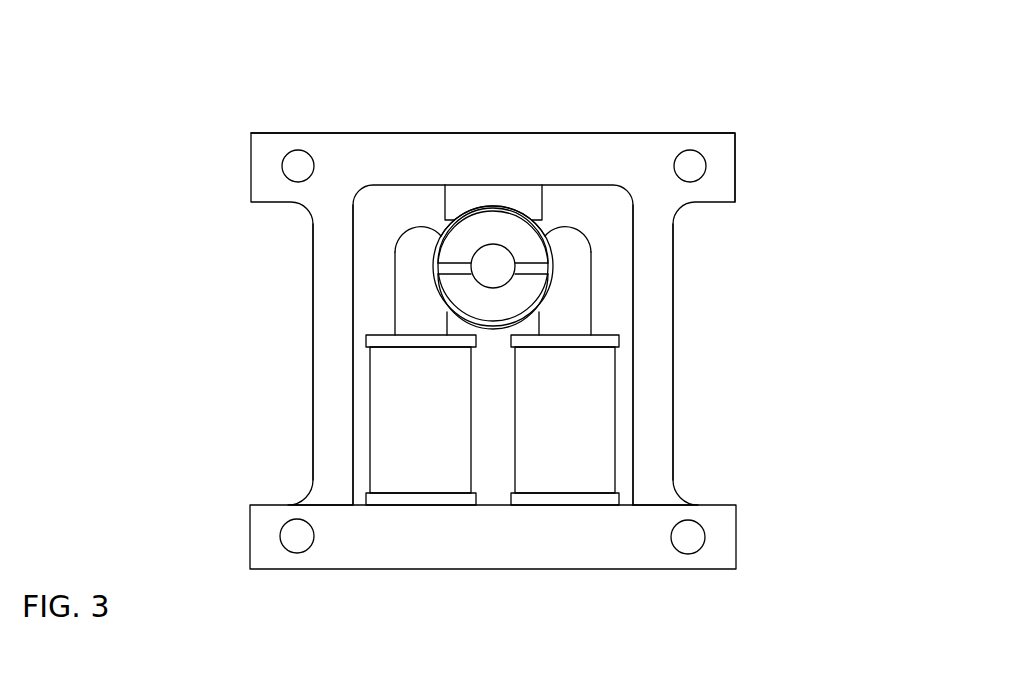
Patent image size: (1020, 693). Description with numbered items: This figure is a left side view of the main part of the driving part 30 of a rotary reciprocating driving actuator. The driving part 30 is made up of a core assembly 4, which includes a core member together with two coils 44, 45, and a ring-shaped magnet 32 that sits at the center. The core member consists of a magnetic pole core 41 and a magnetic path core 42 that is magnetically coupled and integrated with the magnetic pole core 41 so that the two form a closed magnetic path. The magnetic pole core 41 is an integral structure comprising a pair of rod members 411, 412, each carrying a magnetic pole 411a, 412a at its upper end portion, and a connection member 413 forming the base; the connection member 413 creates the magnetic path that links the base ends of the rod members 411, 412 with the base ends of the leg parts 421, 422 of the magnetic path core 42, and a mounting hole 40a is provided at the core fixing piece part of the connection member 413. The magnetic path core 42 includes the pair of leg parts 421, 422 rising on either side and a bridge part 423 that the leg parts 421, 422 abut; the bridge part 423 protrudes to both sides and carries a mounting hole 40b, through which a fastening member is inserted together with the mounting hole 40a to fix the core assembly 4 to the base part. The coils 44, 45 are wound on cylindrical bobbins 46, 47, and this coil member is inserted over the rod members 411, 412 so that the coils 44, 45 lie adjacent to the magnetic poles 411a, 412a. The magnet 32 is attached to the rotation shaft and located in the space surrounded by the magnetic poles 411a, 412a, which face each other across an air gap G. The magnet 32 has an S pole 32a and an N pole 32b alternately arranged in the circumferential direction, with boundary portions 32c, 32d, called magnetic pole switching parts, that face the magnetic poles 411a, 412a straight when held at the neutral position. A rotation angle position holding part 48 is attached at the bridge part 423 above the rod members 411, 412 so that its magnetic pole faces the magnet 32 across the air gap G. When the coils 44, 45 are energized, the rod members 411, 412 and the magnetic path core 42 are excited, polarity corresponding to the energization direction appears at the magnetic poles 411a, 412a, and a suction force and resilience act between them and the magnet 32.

The driving part 30 is at (479, 37).
The core assembly 4 is at (283, 305).
The magnetic pole core 41 is at (238, 546).
The magnetic path core 42 is at (238, 199).
The rod member 411 is at (407, 313).
The rod member 412 is at (580, 290).
The magnetic pole 411a is at (421, 250).
The magnetic pole 412a is at (559, 238).
The connection member 413 is at (493, 548).
The leg part 421 is at (337, 362).
The leg part 422 is at (653, 302).
The bridge part 423 is at (650, 160).
The mounting hole 40a is at (285, 533).
The mounting hole 40b is at (287, 163).
The coil 44 is at (397, 418).
The coil 45 is at (573, 438).
The bobbin 46 is at (397, 342).
The bobbin 47 is at (592, 342).
The rotation angle position holding part 48 is at (472, 195).
The magnet 32 is at (535, 235).
The S pole 32a is at (467, 238).
The N pole 32b is at (495, 322).
The boundary portion 32c is at (437, 265).
The boundary portion 32d is at (533, 268).
The air gap G is at (522, 213).